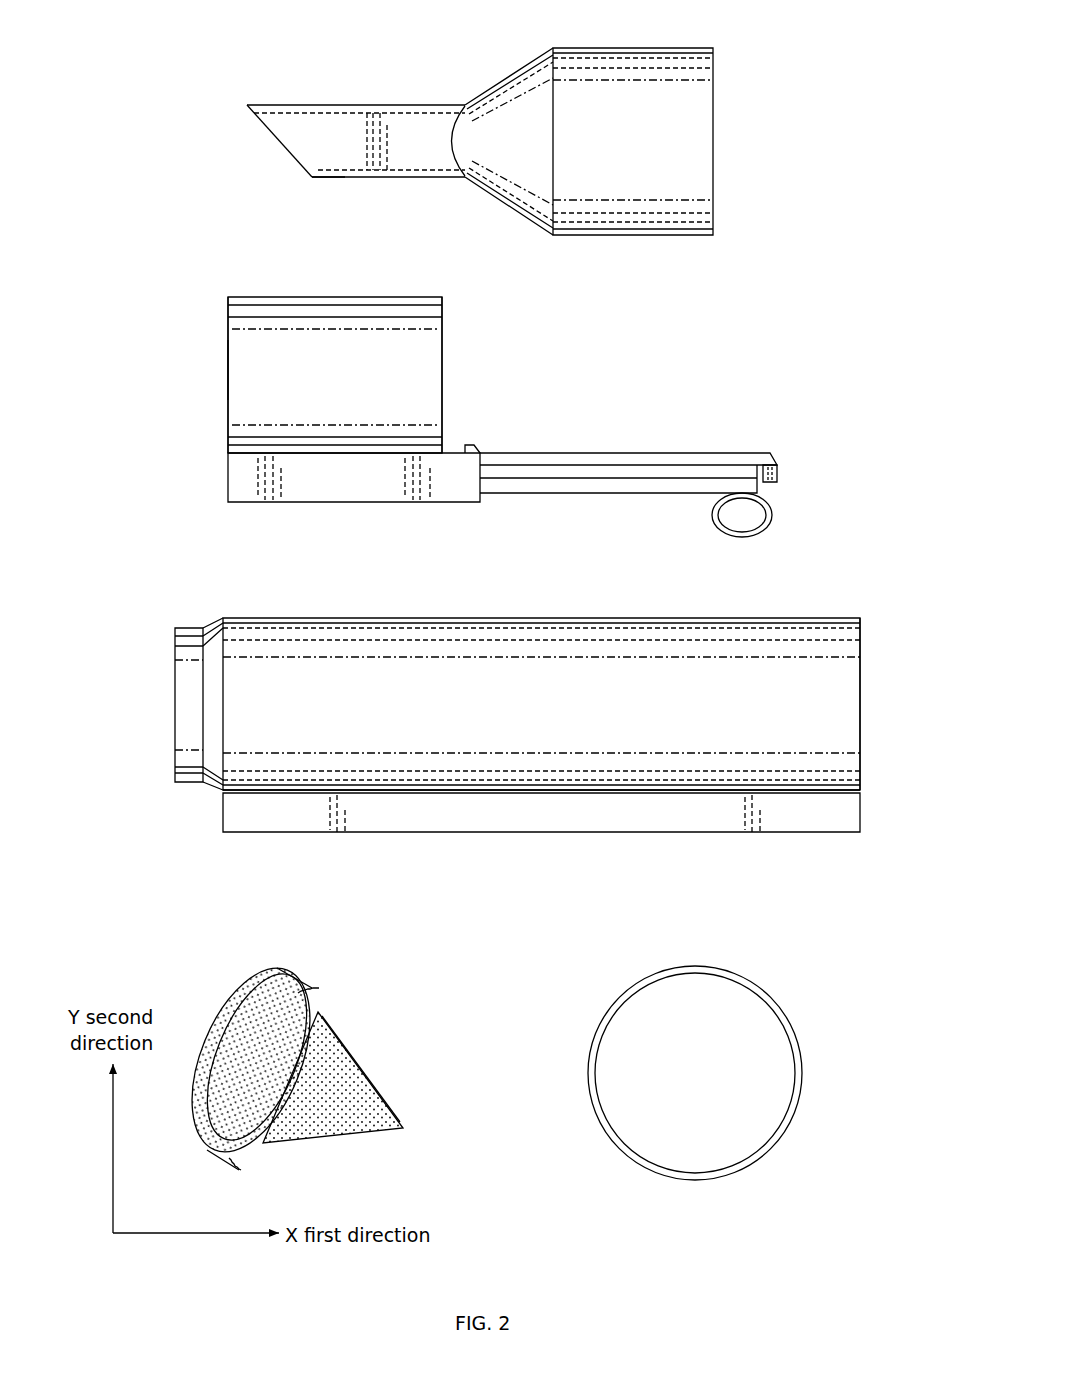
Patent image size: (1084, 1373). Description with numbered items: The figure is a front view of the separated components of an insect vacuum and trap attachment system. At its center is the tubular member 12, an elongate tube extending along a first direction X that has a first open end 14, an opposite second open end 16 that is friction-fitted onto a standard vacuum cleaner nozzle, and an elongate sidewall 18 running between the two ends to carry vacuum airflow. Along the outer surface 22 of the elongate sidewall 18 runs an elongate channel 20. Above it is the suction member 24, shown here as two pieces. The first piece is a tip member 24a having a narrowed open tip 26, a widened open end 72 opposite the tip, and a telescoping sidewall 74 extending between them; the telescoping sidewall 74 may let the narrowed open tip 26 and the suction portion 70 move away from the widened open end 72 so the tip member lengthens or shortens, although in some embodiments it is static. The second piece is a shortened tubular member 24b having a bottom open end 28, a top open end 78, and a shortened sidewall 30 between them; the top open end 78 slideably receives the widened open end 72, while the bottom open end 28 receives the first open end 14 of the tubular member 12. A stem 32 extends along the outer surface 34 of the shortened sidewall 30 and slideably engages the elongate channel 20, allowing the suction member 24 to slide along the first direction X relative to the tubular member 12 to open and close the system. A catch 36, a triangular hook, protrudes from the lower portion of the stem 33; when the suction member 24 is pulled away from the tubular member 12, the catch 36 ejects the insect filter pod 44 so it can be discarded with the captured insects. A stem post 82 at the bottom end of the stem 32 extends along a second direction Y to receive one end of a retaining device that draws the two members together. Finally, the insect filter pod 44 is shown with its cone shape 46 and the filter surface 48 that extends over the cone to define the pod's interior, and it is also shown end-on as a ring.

The tubular member 12 is at (370, 610).
The first open end 14 is at (190, 695).
The second open end 16 is at (857, 704).
The elongate sidewall 18 is at (578, 610).
The elongate channel 20 is at (696, 816).
The outer surface of the elongate sidewall 22 is at (455, 777).
The suction member 24 is at (277, 143).
The tip member 24a is at (247, 104).
The shortened tubular member 24b is at (444, 378).
The narrowed open tip 26 is at (325, 183).
The bottom open end 28 is at (446, 325).
The shortened sidewall 30 is at (370, 296).
The stem 32 is at (226, 486).
The lower portion of the stem 33 is at (457, 482).
The outer surface of the shortened sidewall 34 is at (324, 377).
The catch 36 is at (480, 446).
The insect filter pod 44 is at (563, 1035).
The cone shape 46 is at (382, 1089).
The filter surface 48 is at (263, 1030).
The suction portion 70 is at (362, 103).
The widened open end 72 is at (716, 146).
The telescoping sidewall 74 is at (506, 72).
The top open end 78 is at (226, 384).
The stem post 82 is at (779, 473).